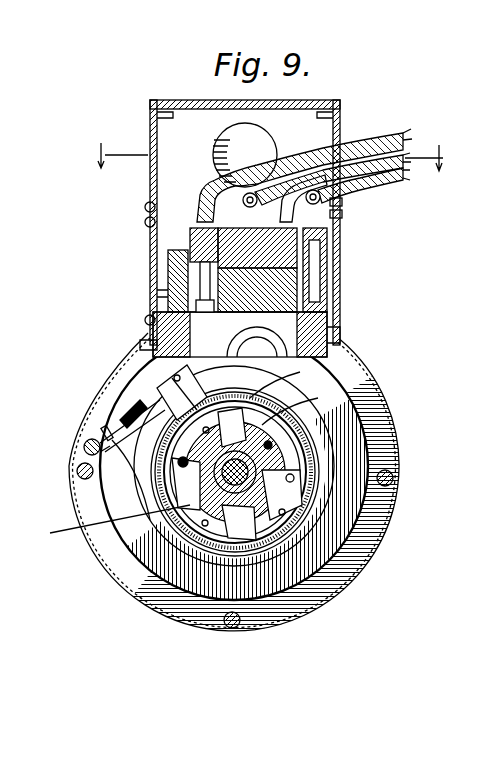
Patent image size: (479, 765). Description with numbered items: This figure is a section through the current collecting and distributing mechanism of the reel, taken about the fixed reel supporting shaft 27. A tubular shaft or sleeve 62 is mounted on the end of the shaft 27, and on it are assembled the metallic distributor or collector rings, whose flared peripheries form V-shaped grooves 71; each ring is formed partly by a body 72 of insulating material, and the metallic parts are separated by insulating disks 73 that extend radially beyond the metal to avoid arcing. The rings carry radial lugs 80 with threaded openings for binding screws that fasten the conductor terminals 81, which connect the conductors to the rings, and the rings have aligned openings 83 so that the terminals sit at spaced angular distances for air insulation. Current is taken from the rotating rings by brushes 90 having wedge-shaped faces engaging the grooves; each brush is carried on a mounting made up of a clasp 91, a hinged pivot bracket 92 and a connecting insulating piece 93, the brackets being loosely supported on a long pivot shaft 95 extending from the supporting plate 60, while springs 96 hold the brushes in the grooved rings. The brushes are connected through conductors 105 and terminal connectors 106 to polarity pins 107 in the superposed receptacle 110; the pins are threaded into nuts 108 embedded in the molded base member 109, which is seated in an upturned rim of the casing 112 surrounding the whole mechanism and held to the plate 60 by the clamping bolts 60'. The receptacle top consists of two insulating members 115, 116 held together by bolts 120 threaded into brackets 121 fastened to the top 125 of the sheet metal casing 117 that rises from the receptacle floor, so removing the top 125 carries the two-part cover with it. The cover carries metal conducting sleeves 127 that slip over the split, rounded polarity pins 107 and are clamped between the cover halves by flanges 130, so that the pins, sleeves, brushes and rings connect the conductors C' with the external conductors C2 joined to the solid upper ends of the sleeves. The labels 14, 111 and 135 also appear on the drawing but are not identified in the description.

The section line 14 is at (270, 157).
The fixed reel supporting shaft 27 is at (255, 555).
The supporting plate 60 is at (252, 482).
The clamping bolts 60' is at (229, 553).
The tubular shaft 62 is at (347, 562).
The V-shaped grooves 71 is at (210, 518).
The body of insulating material 72 is at (317, 580).
The insulating disks 73 is at (350, 530).
The lugs 80 is at (215, 513).
The conductor terminals 81 is at (402, 393).
The openings 83 is at (222, 566).
The brushes 90 is at (160, 425).
The clasp 91 is at (157, 383).
The hinged pivot bracket 92 is at (87, 428).
The connecting insulating piece 93 is at (107, 432).
The pivot shaft 95 is at (100, 447).
The springs 96 is at (100, 440).
The conductors 105 is at (270, 420).
The terminal connectors 106 is at (250, 398).
The polarity pin 107 is at (158, 297).
The nuts 108 is at (147, 347).
The base member 109 is at (148, 317).
The receptacle 110 is at (338, 343).
The edge 111 is at (345, 325).
The casing 112 is at (400, 522).
The insulating member 115 is at (337, 232).
The insulating member 116 is at (340, 268).
The sheet metal casing 117 is at (333, 282).
The bolts 120 is at (148, 252).
The brackets 121 is at (148, 232).
The casing top 125 is at (147, 168).
The metal conducting sleeves 127 is at (148, 275).
The flanges 130 is at (278, 207).
The ball 135 is at (233, 128).
The conductors C' is at (235, 463).
The external conductors C2 is at (371, 137).